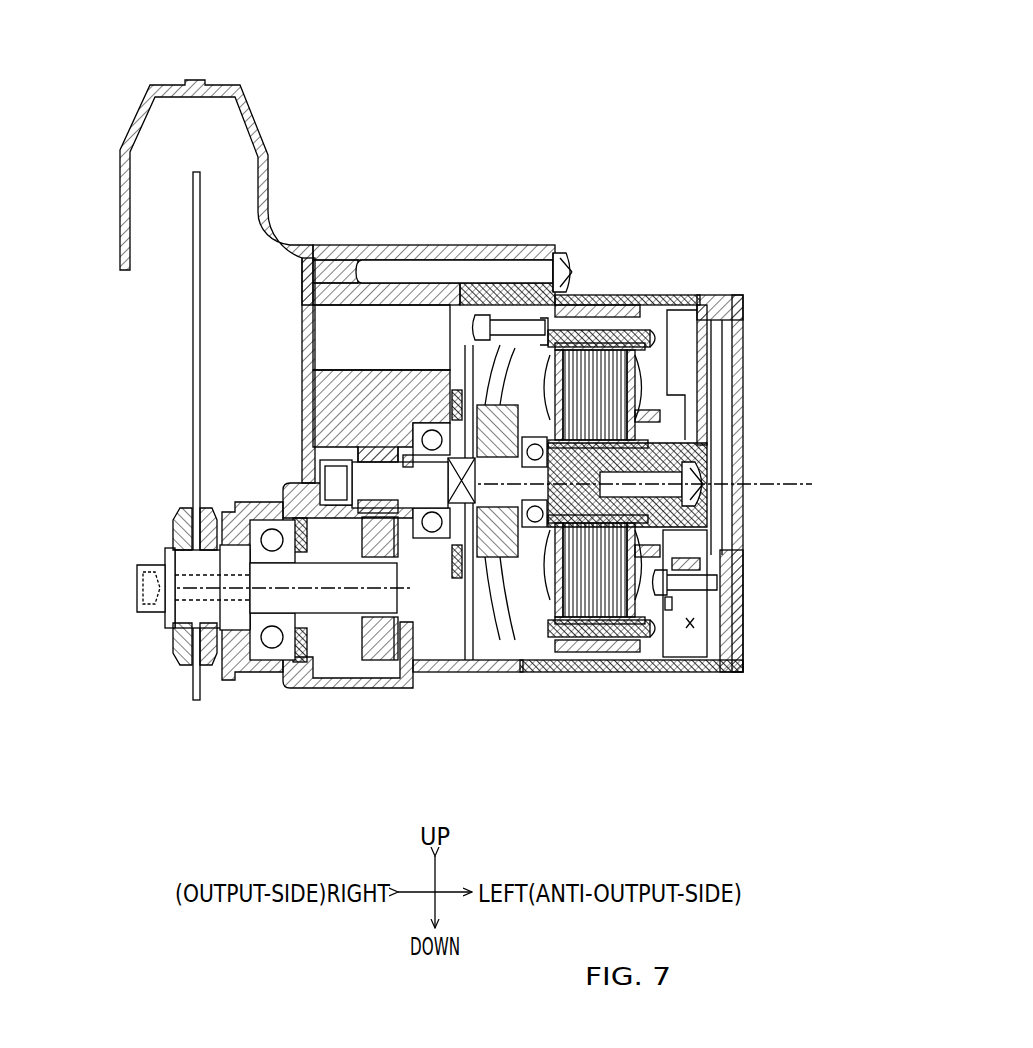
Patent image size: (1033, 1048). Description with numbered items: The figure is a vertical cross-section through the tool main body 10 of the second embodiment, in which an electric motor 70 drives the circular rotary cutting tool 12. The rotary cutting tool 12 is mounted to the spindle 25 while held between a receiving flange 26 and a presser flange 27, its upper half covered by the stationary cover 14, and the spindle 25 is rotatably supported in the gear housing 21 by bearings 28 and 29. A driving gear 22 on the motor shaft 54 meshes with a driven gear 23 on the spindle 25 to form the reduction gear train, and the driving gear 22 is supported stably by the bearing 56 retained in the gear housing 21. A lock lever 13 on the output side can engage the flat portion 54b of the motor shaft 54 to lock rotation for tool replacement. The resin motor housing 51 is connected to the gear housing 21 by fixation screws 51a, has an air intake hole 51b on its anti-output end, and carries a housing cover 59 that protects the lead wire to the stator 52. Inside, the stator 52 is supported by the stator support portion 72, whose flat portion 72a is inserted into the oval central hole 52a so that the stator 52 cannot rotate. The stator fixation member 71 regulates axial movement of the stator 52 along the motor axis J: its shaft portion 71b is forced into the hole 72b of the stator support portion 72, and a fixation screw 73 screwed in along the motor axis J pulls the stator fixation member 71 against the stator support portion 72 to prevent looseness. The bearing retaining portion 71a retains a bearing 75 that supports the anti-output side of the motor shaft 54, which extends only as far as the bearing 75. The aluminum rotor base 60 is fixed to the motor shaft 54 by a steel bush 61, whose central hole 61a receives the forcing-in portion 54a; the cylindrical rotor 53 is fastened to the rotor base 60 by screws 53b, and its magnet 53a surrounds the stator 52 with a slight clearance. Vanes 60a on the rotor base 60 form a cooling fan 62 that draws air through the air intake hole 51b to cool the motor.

The tool main body 10 is at (277, 112).
The rotary cutting tool 12 is at (193, 305).
The lock lever 13 is at (467, 600).
The stationary cover 14 is at (125, 130).
The gear housing 21 is at (330, 243).
The driving gear 22 is at (345, 465).
The driven gear 23 is at (380, 647).
The spindle 25 is at (175, 650).
The receiving flange 26 is at (205, 518).
The presser flange 27 is at (180, 533).
The bearing 28 is at (272, 648).
The bearing 29 is at (432, 540).
The motor housing 51 is at (650, 295).
The fixation screw 51a is at (542, 318).
The air intake hole 51b is at (692, 628).
The stator 52 is at (600, 376).
The oval central hole 52a is at (600, 620).
The rotor 53 is at (655, 334).
The magnet 53a is at (565, 650).
The screw 53b is at (480, 305).
The motor shaft 54 is at (425, 430).
The forcing-in portion 54a is at (440, 535).
The flat portion 54b is at (432, 425).
The bearing 56 is at (392, 258).
The housing cover 59 is at (745, 632).
The rotor base 60 is at (480, 435).
The vane 60a is at (505, 345).
The steel bush 61 is at (520, 320).
The central hole 61a is at (470, 318).
The cooling fan 62 is at (535, 530).
The electric motor 70 is at (681, 292).
The stator fixation member 71 is at (576, 400).
The bearing retaining portion 71a is at (570, 330).
The shaft portion 71b is at (652, 424).
The stator support portion 72 is at (705, 448).
The flat portion 72a is at (668, 390).
The hole 72b is at (637, 620).
The fixation screw 73 is at (717, 468).
The bearing 75 is at (545, 640).
The motor axis J is at (575, 484).